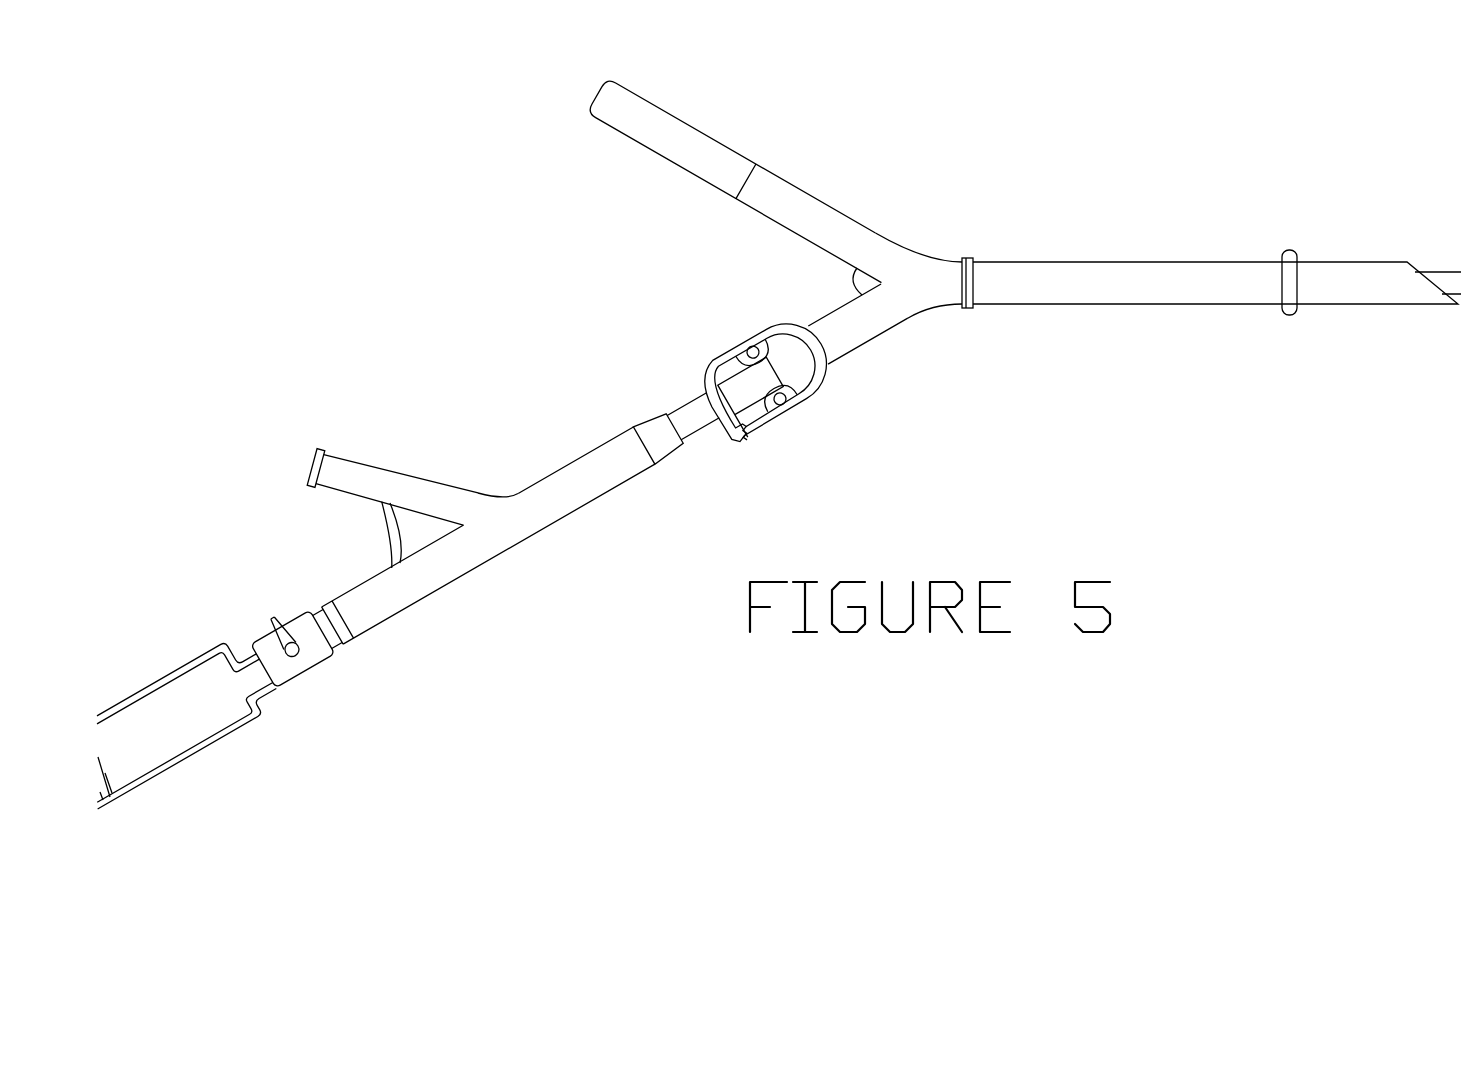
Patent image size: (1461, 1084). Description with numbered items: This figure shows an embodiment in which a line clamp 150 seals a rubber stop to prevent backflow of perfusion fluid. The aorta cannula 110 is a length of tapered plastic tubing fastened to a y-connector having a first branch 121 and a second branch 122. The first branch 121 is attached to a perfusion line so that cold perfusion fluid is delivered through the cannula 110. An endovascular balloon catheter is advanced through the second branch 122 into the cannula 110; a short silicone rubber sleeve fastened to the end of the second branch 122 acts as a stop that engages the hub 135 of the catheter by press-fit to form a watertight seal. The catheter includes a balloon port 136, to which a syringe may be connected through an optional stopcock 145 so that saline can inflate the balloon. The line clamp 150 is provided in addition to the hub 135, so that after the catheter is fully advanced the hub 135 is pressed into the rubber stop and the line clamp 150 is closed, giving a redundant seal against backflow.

The aorta cannula 110 is at (1203, 254).
The first branch 121 is at (808, 182).
The second branch 122 is at (893, 339).
The hub 135 is at (662, 467).
The balloon port 136 is at (407, 461).
The stopcock 145 is at (274, 612).
The line clamp 150 is at (733, 336).